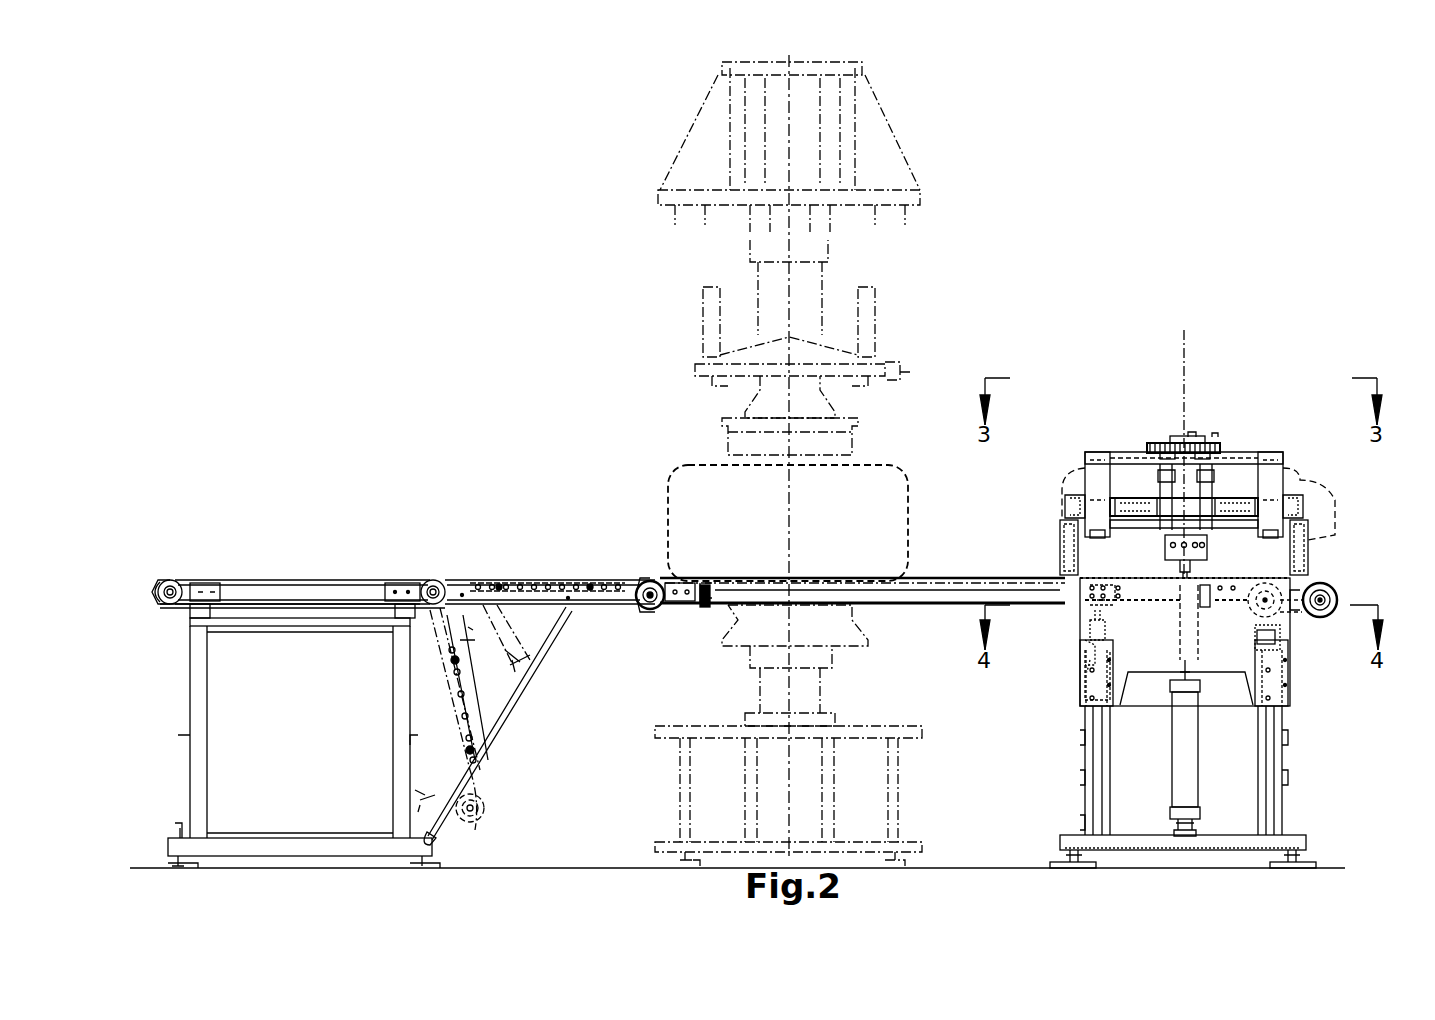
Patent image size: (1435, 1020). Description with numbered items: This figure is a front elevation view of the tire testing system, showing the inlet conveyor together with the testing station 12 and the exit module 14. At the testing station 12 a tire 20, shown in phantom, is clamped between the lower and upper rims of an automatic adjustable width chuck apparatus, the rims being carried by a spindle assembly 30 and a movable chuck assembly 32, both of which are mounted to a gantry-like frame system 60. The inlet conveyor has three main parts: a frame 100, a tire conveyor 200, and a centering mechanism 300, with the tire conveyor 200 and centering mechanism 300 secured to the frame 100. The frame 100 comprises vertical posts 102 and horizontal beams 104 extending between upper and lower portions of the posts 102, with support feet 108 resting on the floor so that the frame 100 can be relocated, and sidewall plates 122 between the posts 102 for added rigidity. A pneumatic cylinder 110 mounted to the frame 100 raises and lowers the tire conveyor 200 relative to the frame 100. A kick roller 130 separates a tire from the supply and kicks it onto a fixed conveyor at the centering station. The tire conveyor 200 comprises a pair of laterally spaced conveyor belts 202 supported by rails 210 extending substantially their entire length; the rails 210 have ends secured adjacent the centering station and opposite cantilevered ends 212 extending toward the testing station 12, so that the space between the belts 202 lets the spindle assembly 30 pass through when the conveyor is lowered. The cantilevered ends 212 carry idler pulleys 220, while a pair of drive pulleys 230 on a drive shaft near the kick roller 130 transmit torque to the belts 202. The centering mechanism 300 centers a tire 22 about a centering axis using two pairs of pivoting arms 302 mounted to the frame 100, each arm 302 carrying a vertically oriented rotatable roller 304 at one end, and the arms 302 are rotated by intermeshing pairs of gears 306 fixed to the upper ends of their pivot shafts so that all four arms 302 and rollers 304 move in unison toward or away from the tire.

The testing station 12 is at (640, 238).
The exit module 14 is at (385, 556).
The tire 20 is at (690, 497).
The tire 22 is at (1295, 483).
The spindle assembly 30 is at (873, 658).
The movable chuck assembly 32 is at (905, 325).
The gantry-like frame system 60 is at (930, 160).
The frame 100 is at (1312, 724).
The vertical posts 102 is at (1095, 452).
The horizontal beams 104 is at (1222, 850).
The support feet 108 is at (1075, 868).
The pneumatic cylinder 110 is at (1188, 733).
The sidewall plates 122 is at (1211, 640).
The kick roller 130 is at (1318, 585).
The tire conveyor 200 is at (948, 668).
The conveyor belts 202 is at (975, 578).
The rails 210 is at (1032, 590).
The cantilevered ends of rails 212 is at (720, 604).
The idler pulleys 220 is at (648, 610).
The drive pulleys 230 is at (1275, 615).
The centering mechanism 300 is at (1208, 365).
The pivoting arms 302 is at (1125, 497).
The rollers 304 is at (1300, 538).
The gears 306 is at (1170, 440).